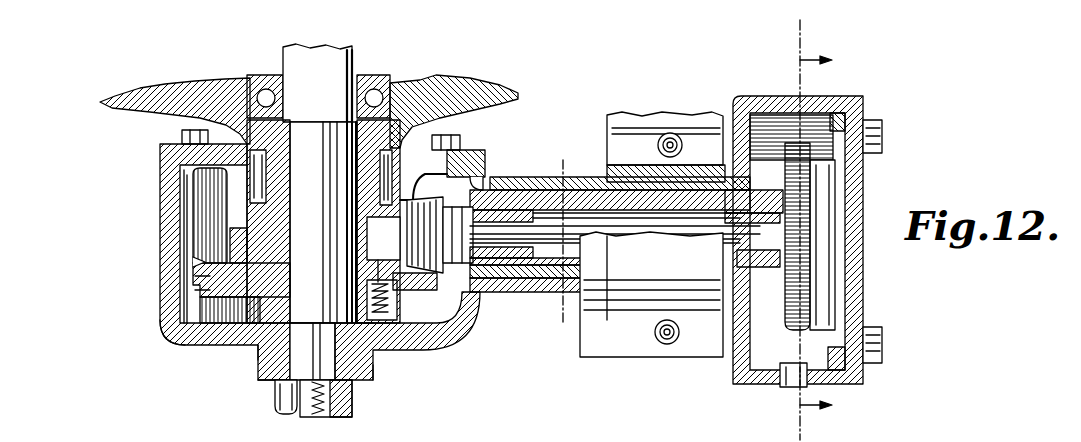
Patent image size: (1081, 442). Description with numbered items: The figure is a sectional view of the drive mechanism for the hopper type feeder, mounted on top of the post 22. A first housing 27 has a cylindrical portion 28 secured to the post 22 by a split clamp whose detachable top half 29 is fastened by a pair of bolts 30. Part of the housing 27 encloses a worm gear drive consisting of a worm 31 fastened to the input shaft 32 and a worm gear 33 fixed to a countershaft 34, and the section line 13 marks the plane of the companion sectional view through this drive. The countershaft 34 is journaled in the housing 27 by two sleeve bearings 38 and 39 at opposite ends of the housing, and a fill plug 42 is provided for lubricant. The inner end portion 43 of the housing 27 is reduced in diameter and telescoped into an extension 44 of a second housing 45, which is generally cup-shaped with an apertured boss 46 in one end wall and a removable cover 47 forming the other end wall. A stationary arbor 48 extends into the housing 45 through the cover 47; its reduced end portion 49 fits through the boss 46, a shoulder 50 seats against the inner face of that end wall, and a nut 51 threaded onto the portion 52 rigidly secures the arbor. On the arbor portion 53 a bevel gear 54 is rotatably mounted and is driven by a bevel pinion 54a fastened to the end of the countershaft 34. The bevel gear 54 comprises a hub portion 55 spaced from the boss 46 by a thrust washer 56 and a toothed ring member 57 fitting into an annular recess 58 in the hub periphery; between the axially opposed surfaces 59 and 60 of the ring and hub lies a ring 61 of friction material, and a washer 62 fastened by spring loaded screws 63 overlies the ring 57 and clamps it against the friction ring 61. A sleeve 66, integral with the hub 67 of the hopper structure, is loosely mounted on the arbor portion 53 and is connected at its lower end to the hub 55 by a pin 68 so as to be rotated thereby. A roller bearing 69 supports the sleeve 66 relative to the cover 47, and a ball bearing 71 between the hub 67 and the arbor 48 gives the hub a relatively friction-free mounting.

The section line 13- 13 is at (796, 231).
The post 22 is at (607, 362).
The first housing 27 is at (833, 100).
The cylindrical portion 28 is at (580, 232).
The detachable top half 29 is at (607, 340).
The bolts 30 is at (672, 135).
The worm 31 is at (729, 438).
The input shaft 32 is at (583, 438).
The worm gear 33 is at (786, 168).
The countershaft 34 is at (530, 244).
The sleeve bearing 38 is at (483, 216).
The sleeve bearing 39 is at (770, 268).
The fill plug 42 is at (780, 386).
The inner end portion 43 is at (488, 292).
The extension 44 is at (530, 292).
The second housing 45 is at (425, 347).
The apertured boss 46 is at (373, 378).
The removable cover 47 is at (158, 155).
The stationary arbor 48 is at (356, 62).
The reduced end portion 49 is at (258, 377).
The shoulder 50 is at (258, 348).
The nut 51 is at (279, 415).
The threaded portion 52 is at (325, 418).
The arbor portion 53 is at (322, 226).
The bevel gear 54 is at (195, 328).
The bevel pinion 54a is at (478, 158).
The hub portion 55 is at (230, 310).
The thrust washer 56 is at (362, 325).
The toothed ring member 57 is at (205, 245).
The annular recess 58 is at (250, 268).
The axially opposed surface 59 is at (193, 262).
The axially opposed surface 60 is at (195, 290).
The friction ring 61 is at (195, 278).
The washer 62 is at (241, 245).
The spring loaded screws 63 is at (396, 315).
The sleeve 66 is at (285, 181).
The hub 67 is at (478, 93).
The pin 68 is at (383, 205).
The roller bearing 69 is at (432, 145).
The ball bearing 71 is at (390, 80).